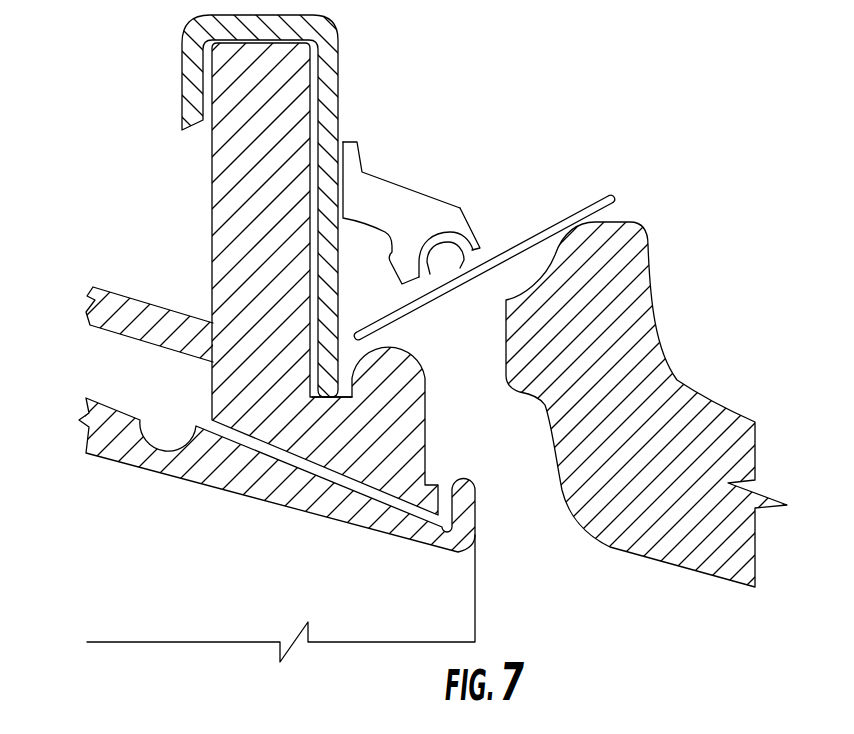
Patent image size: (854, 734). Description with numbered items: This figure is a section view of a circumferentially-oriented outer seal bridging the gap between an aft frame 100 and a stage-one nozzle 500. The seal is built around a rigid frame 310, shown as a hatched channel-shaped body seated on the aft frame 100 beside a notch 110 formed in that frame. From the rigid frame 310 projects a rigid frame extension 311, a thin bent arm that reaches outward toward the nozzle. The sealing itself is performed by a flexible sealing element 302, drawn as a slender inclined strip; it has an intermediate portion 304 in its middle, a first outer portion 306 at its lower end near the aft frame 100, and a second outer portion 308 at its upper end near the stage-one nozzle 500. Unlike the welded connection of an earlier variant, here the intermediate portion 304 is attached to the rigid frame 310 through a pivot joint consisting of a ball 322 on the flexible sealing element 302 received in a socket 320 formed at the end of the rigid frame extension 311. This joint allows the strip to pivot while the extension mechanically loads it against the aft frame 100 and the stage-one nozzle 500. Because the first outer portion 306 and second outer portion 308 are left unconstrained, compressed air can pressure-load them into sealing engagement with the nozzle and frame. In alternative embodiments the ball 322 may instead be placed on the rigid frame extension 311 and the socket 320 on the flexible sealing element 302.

The aft frame 100 is at (412, 448).
The notch 110 is at (333, 403).
The flexible sealing element 302 is at (616, 196).
The intermediate portion 304 is at (477, 276).
The first outer portion 306 is at (356, 329).
The second outer portion 308 is at (568, 198).
The rigid frame 310 is at (337, 112).
The rigid frame extension 311 is at (392, 197).
The socket 320 is at (447, 233).
The ball 322 is at (475, 240).
The stage-one nozzle 500 is at (633, 297).